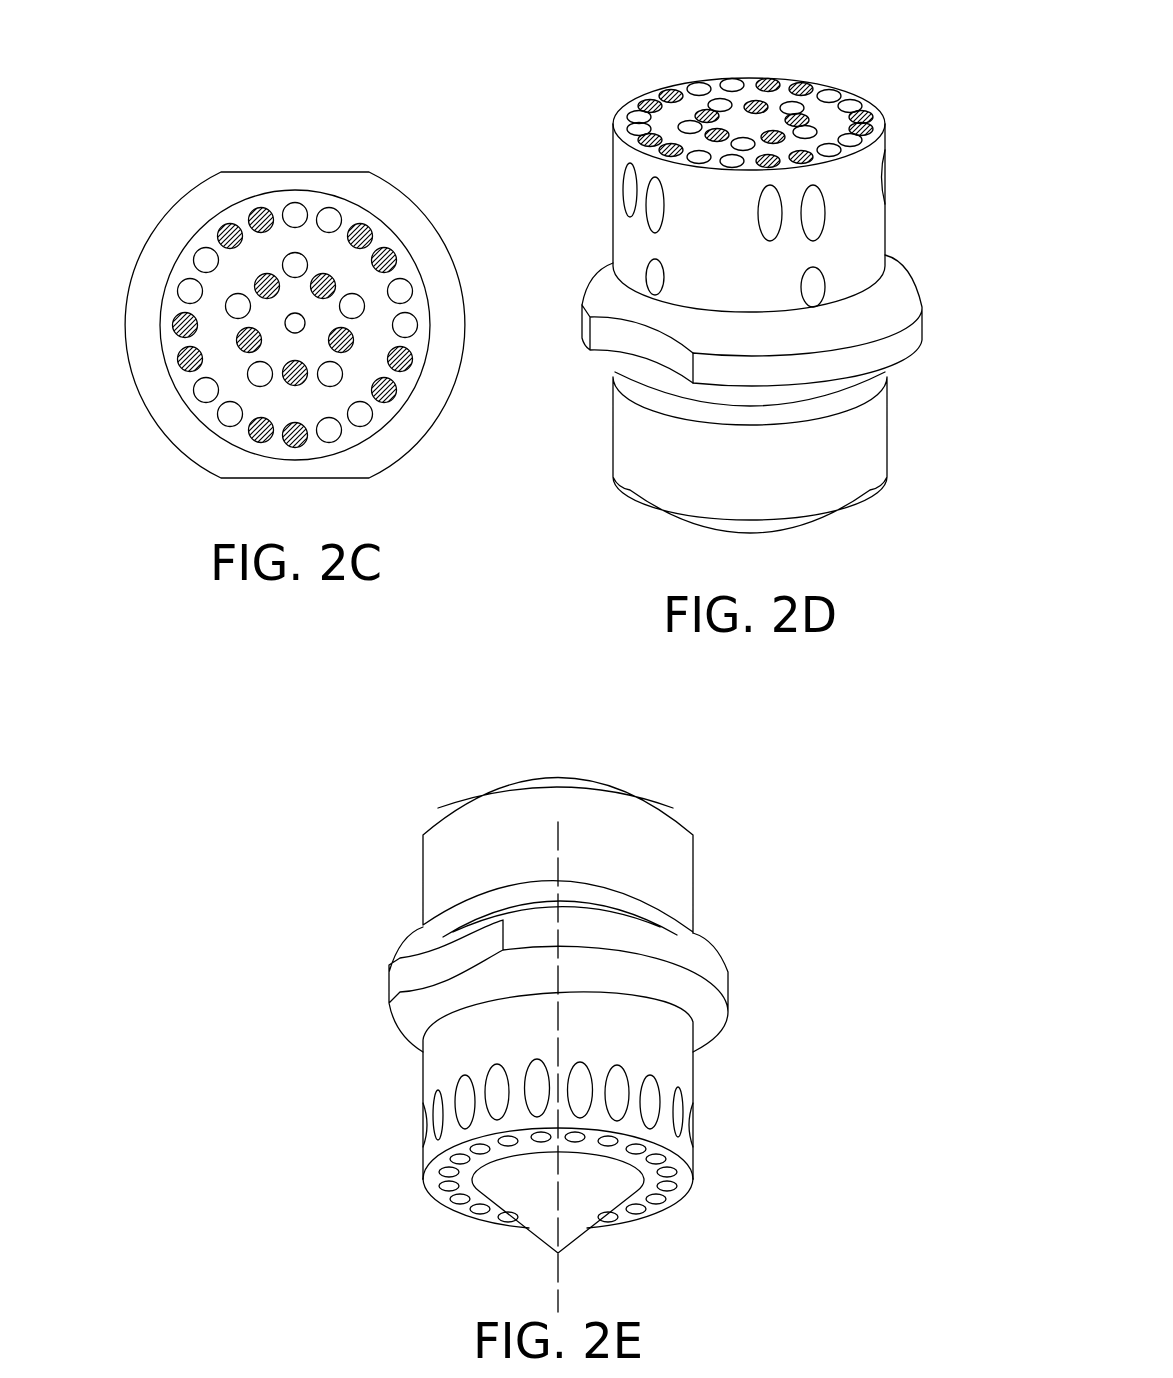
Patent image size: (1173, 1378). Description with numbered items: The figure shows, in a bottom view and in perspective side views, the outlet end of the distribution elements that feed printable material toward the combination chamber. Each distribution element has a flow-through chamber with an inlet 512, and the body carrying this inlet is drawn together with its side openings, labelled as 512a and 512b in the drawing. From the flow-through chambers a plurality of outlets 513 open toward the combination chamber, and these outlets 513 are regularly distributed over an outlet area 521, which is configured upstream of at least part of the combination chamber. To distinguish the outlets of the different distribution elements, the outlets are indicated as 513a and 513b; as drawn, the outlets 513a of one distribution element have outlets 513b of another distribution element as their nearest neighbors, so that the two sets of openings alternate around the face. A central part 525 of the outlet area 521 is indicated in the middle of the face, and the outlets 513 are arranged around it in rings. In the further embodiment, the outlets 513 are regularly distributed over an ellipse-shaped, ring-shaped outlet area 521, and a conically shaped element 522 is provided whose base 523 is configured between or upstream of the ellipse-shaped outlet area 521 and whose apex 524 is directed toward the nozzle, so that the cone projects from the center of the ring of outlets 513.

In FIG. 2D, the inlet 512 is at (783, 354).
In FIG. 2E, the inlet 512 is at (495, 912).
In FIG. 2D, the cylindrical housing portion 512a is at (818, 542).
In FIG. 2E, the cylindrical housing portion 512a is at (579, 752).
In FIG. 2D, the side openings of the housing 512b is at (817, 282).
In FIG. 2E, the side openings of the housing 512b is at (495, 1080).
In FIG. 2C, the outlets 513 is at (286, 314).
In FIG. 2D, the outlets 513 is at (798, 95).
In FIG. 2E, the outlets 513 is at (644, 1215).
In FIG. 2C, the outlets of a first distribution element 513a is at (212, 260).
In FIG. 2D, the outlets of a first distribution element 513a is at (866, 139).
In FIG. 2E, the outlets of a first distribution element 513a is at (637, 1214).
In FIG. 2C, the outlets of a second distribution element 513b is at (249, 342).
In FIG. 2D, the outlets of a second distribution element 513b is at (802, 88).
In FIG. 2E, the outlets of a second distribution element 513b is at (672, 1178).
In FIG. 2C, the outlet area 521 is at (307, 405).
In FIG. 2D, the outlet area 521 is at (660, 95).
In FIG. 2E, the outlet area 521 is at (574, 1147).
In FIG. 2E, the conically shaped element 522 is at (473, 1213).
In FIG. 2E, the base 523 is at (555, 1138).
In FIG. 2E, the apex 524 is at (558, 1254).
In FIG. 2C, the central part of the outlet area 525 is at (295, 323).